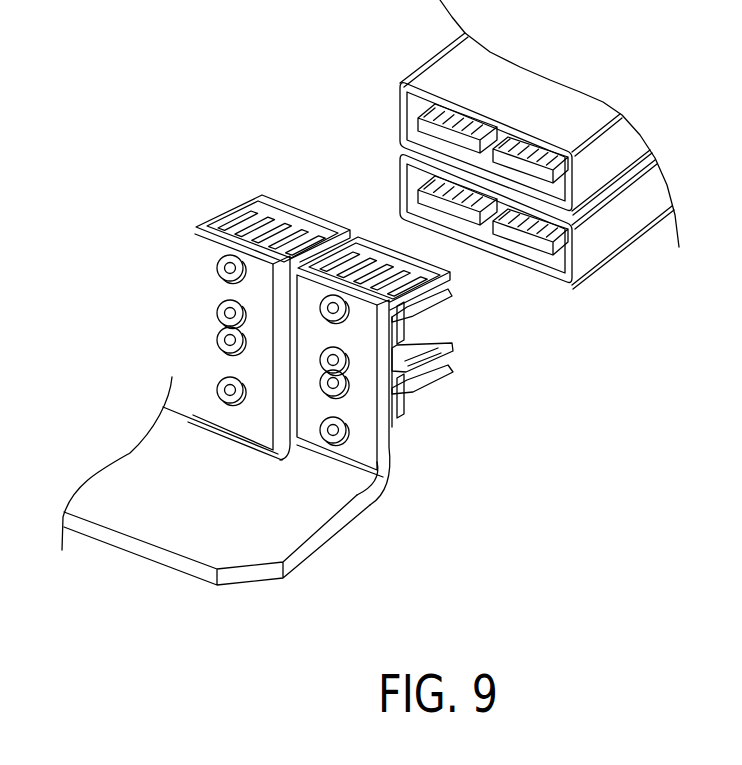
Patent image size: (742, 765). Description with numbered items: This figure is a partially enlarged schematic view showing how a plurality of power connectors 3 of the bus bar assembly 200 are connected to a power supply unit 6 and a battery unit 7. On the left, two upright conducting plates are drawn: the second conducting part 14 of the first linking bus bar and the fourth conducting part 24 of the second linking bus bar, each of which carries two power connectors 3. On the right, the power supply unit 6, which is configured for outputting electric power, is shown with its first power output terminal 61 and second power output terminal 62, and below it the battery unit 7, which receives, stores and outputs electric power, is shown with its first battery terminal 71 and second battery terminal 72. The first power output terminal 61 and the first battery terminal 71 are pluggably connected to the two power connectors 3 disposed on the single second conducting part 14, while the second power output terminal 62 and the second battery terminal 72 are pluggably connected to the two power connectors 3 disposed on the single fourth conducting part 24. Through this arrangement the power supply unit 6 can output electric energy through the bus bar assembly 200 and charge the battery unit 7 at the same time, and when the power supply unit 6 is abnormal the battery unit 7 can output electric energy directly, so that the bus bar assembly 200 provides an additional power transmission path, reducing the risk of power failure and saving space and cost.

The bus bar assembly 200 is at (302, 410).
The second conducting part 14 is at (357, 418).
The fourth conducting part 24 is at (200, 284).
The power connector 3 is at (272, 200).
The power supply unit 6 is at (500, 109).
The first power output terminal 61 is at (545, 172).
The second power output terminal 62 is at (428, 127).
The battery unit 7 is at (501, 254).
The first battery terminal 71 is at (545, 248).
The second battery terminal 72 is at (433, 200).